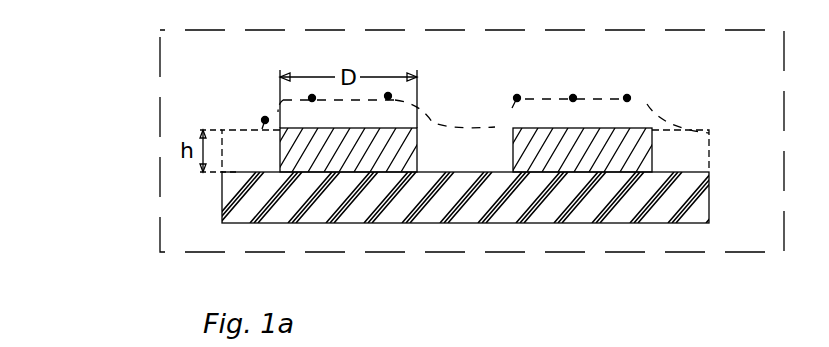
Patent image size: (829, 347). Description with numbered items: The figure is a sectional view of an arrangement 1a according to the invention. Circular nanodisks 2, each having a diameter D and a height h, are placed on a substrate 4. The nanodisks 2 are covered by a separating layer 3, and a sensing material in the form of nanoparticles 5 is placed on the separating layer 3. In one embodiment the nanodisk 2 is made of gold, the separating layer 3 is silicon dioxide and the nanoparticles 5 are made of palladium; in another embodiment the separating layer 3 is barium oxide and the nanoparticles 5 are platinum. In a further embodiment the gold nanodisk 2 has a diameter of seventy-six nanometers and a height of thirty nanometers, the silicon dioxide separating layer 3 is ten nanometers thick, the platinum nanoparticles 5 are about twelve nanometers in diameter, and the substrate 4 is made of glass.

The arrangement 1a is at (133, 88).
The circular nanodisks 2 is at (291, 143).
The separating layer 3 is at (293, 110).
The substrate 4 is at (662, 195).
The nanoparticles 5 is at (393, 93).